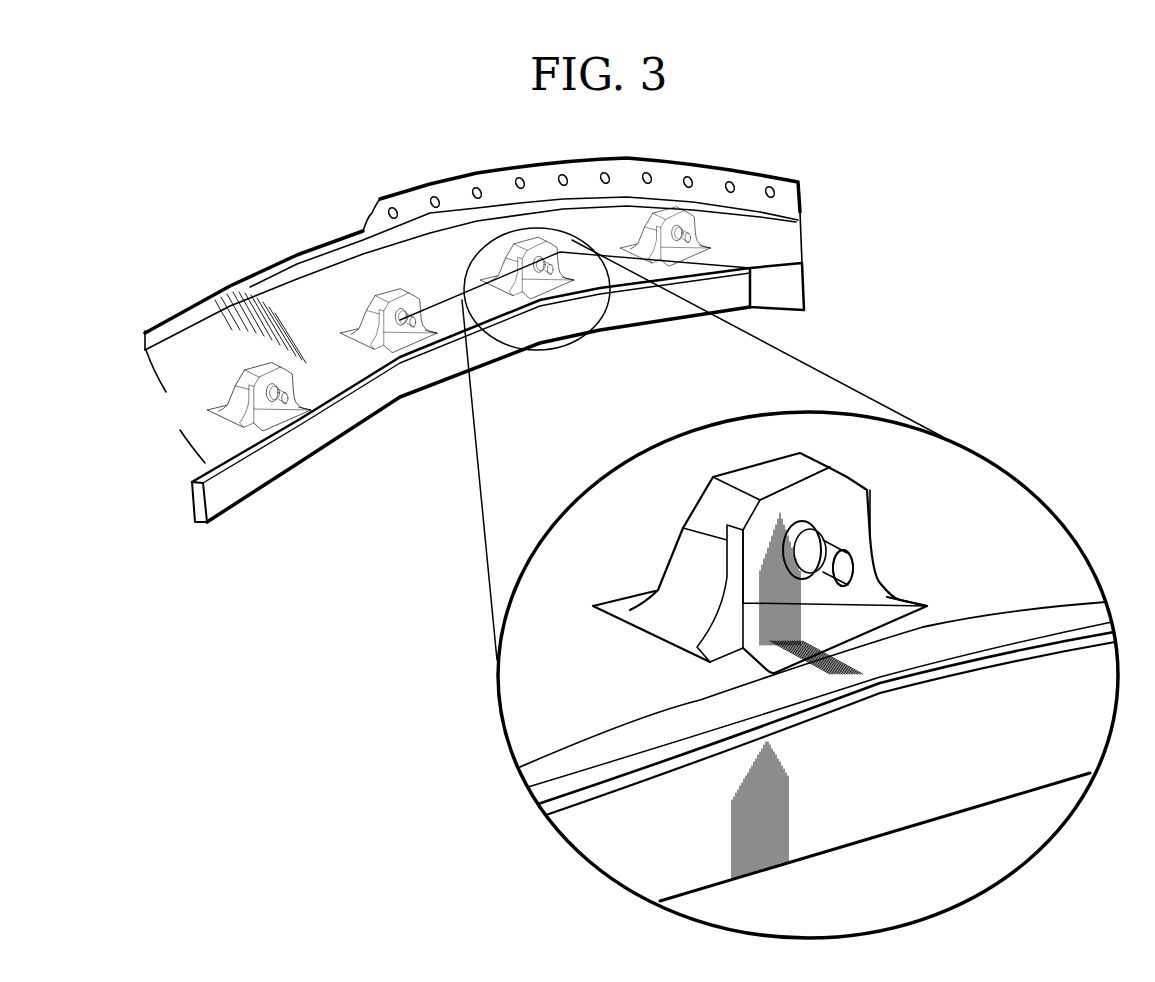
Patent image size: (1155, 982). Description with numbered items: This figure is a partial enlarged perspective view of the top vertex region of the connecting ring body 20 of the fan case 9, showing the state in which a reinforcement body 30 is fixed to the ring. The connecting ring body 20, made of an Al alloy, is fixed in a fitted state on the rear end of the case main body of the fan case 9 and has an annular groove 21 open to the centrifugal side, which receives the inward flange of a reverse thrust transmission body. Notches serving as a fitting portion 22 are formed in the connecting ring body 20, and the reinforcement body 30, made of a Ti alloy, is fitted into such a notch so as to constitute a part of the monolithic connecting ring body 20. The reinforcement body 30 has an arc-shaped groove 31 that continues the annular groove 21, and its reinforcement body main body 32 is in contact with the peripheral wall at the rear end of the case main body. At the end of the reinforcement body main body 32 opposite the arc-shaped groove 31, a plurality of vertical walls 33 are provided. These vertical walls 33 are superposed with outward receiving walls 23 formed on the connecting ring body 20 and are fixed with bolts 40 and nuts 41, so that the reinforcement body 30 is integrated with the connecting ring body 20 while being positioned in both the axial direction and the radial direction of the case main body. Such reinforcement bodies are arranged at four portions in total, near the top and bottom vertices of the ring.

The fan case 9 is at (410, 170).
The connecting ring body 20 is at (303, 253).
The annular groove 21 is at (240, 458).
The notches (fitting portion) 22 is at (360, 373).
The outward receiving walls 23 is at (387, 283).
The reinforcement body 30 is at (400, 393).
The arc-shaped groove 31 is at (348, 392).
The reinforcement body main body 32 is at (920, 642).
The vertical walls 33 is at (848, 495).
The bolts 40 is at (847, 567).
The nuts 41 is at (820, 540).